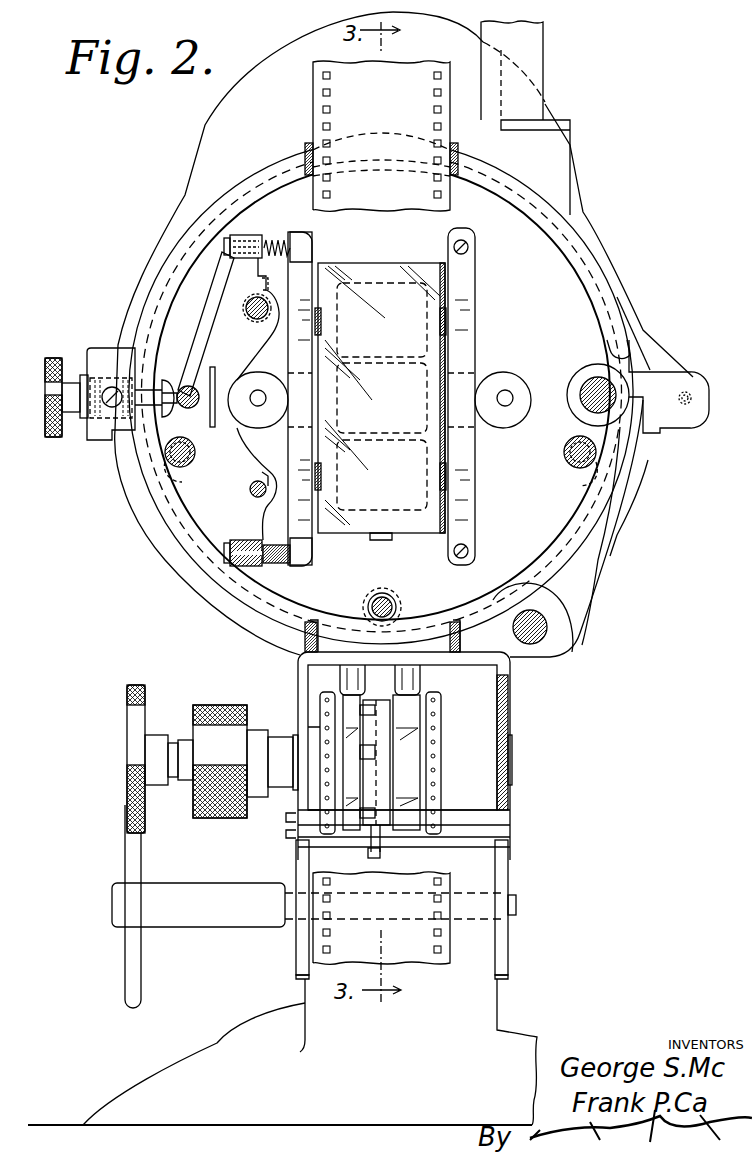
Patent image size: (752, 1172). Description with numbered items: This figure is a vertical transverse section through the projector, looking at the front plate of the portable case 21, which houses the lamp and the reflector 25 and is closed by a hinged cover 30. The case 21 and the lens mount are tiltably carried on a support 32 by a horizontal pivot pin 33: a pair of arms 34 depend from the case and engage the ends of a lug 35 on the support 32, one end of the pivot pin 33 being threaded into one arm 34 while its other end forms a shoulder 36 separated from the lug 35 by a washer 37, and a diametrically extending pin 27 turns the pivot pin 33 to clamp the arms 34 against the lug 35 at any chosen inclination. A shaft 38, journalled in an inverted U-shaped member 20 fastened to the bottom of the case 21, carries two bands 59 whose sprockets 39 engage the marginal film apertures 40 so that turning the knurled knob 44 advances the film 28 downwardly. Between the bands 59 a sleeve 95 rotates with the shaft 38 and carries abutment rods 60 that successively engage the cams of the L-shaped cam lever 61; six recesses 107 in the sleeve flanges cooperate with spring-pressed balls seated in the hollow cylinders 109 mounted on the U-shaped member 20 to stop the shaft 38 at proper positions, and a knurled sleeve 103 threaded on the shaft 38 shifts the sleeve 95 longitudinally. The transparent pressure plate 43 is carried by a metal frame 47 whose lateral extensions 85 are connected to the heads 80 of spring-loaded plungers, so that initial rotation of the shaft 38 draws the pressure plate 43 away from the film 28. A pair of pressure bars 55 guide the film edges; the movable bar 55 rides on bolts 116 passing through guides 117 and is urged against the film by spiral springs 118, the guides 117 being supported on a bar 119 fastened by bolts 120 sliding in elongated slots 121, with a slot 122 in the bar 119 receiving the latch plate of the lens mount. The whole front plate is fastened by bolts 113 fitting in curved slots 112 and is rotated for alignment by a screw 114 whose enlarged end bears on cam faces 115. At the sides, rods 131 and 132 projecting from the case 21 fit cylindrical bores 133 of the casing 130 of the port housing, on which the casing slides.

The inverted U-shaped member 20 is at (290, 672).
The portable case 21 is at (594, 193).
The reflector 25 is at (550, 262).
The diametrically extending pin 27 is at (125, 963).
The film 28 is at (313, 80).
The hinged cover 30 is at (228, 95).
The support 32 is at (215, 1040).
The pivot pin 33 is at (203, 915).
The arms 34 is at (298, 982).
The lug 35 is at (480, 943).
The shoulder 36 is at (292, 895).
The washer 37 is at (292, 954).
The shaft 38 is at (276, 741).
The sprockets 39 is at (322, 702).
The film apertures 40 is at (332, 934).
The transparent pressure plate 43 is at (384, 270).
The knurled knob 44 is at (134, 684).
The metal frame 47 is at (447, 322).
The pressure bars 55 is at (465, 300).
The bands 59 is at (445, 694).
The abutment rods 60 is at (370, 848).
The cam lever 61 is at (382, 852).
The head 80 is at (258, 390).
The lateral extensions 85 is at (278, 418).
The sleeve 95 is at (390, 754).
The knurled sleeve 103 is at (217, 704).
The recesses 107 is at (398, 792).
The hollow cylinder 109 is at (405, 664).
The curved slots 112 is at (172, 480).
The bolts 113 is at (165, 455).
The screw 114 is at (70, 380).
The cam faces 115 is at (178, 385).
The bolts 116 is at (298, 252).
The guides 117 is at (248, 236).
The spiral springs 118 is at (278, 238).
The bar 119 is at (214, 273).
The bolts 120 is at (246, 308).
The elongated slots 121 is at (260, 283).
The slot 122 is at (214, 366).
The casing 130 is at (548, 628).
The rod 131 is at (620, 382).
The rod 132 is at (548, 635).
The cylindrical bore 133 is at (608, 385).